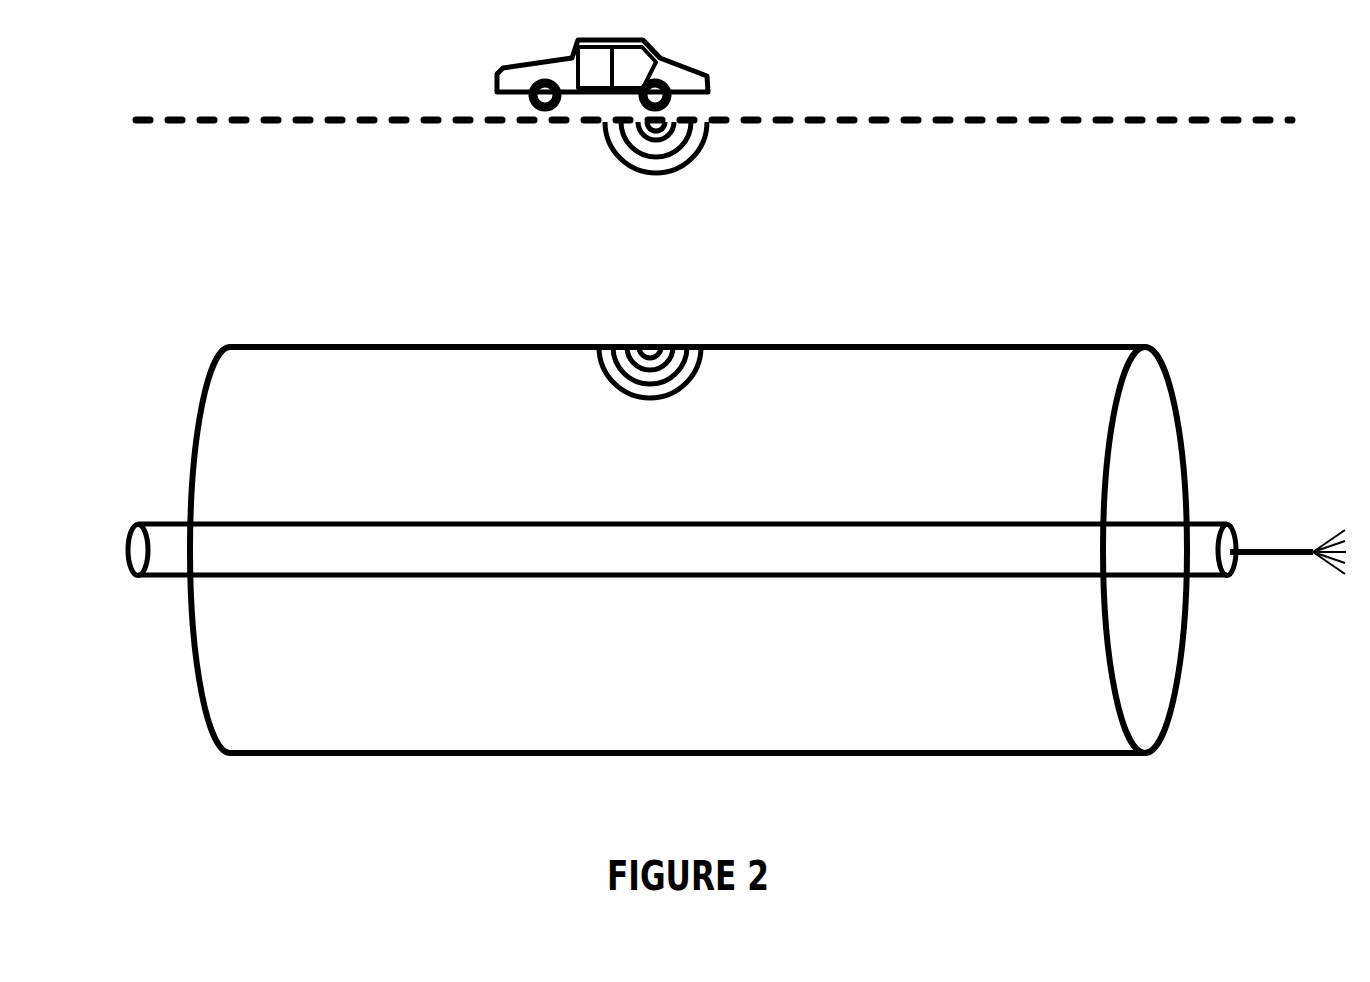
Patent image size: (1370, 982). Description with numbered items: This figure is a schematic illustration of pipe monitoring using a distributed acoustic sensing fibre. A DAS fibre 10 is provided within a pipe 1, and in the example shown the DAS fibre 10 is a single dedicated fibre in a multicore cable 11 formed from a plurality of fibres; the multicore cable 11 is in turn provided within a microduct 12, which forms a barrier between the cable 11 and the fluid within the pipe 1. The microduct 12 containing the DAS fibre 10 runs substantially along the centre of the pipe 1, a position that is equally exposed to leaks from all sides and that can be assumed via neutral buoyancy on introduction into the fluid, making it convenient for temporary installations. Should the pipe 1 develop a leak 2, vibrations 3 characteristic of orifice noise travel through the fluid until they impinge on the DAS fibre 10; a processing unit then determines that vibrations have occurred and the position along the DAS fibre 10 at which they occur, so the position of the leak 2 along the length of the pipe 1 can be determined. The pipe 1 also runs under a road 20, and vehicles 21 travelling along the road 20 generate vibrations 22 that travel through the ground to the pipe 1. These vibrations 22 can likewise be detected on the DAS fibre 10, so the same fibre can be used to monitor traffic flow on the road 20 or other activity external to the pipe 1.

The pipe 1 is at (251, 341).
The leak 2 is at (645, 339).
The vibrations 3 is at (644, 400).
The DAS fibre 10 is at (1323, 537).
The multicore cable 11 is at (1262, 543).
The microduct 12 is at (433, 520).
The road 20 is at (1067, 128).
The vehicles 21 is at (718, 84).
The vibrations 22 is at (659, 180).